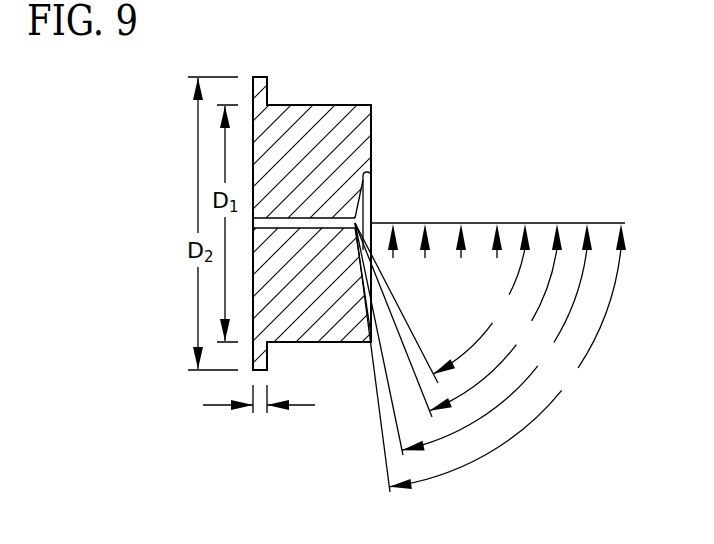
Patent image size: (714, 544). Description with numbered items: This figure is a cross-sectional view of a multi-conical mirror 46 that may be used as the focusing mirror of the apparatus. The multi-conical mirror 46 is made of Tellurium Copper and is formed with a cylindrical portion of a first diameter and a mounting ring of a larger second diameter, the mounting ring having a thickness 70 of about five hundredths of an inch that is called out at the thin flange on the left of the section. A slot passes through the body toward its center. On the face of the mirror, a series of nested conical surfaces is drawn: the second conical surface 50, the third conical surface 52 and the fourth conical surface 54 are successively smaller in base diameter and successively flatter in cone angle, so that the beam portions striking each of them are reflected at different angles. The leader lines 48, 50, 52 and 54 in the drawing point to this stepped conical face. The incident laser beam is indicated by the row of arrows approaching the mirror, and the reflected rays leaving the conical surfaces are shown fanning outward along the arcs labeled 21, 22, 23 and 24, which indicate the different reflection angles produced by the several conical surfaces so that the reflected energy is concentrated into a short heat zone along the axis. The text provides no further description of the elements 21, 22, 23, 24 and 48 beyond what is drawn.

The spray pattern angle 21 is at (440, 303).
The spray pattern angle 22 is at (456, 320).
The spray pattern angle 23 is at (471, 339).
The spray pattern angle 24 is at (488, 357).
The multi-conical mirror 46 is at (340, 344).
The outer layer 48 is at (378, 180).
The second conical surface 50 is at (372, 190).
The third conical surface 52 is at (370, 210).
The fourth conical surface 54 is at (372, 222).
The thickness 70 is at (259, 413).